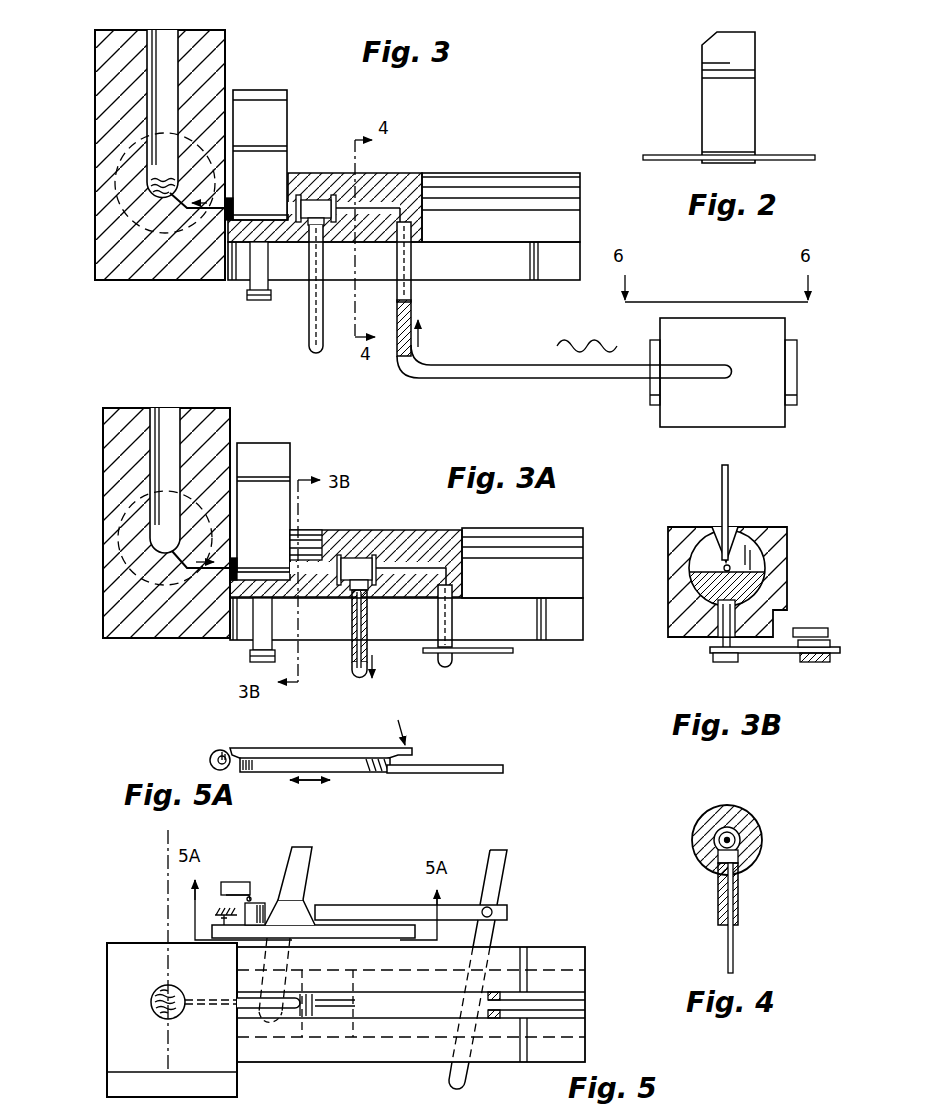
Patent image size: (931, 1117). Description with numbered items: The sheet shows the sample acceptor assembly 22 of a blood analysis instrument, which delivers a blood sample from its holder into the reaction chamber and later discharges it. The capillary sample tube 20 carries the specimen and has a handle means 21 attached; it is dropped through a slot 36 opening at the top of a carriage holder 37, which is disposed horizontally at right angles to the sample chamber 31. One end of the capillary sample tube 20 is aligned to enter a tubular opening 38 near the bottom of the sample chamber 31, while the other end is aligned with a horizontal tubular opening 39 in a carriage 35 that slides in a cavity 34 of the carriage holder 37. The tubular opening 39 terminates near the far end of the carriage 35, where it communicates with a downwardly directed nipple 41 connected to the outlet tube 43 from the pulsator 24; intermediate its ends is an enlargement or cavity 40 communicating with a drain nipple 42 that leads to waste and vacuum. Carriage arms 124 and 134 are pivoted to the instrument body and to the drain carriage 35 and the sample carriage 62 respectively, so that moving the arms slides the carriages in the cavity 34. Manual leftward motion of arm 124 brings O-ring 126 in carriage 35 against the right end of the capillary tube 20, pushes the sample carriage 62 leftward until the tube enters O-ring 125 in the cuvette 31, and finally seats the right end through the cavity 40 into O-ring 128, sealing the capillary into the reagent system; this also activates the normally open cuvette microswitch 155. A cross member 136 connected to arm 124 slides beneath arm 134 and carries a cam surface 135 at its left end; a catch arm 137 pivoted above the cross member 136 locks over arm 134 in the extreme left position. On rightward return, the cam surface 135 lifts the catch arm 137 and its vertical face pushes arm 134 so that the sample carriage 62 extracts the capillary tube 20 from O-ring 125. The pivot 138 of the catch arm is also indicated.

In FIG. 3, the capillary sample tube 20 is at (206, 226).
In FIG. 2, the capillary sample tube 20 is at (768, 155).
In FIG. 3A, the capillary sample tube 20 is at (205, 580).
In FIG. 3B, the capillary sample tube 20 is at (722, 568).
In FIG. 5, the capillary sample tube 20 is at (330, 1020).
In FIG. 3, the handle means 21 is at (287, 106).
In FIG. 2, the handle means 21 is at (756, 56).
In FIG. 3A, the handle means 21 is at (260, 511).
In FIG. 3B, the handle means 21 is at (730, 492).
In FIG. 3, the sample acceptor assembly 22 is at (500, 152).
In FIG. 3, the pulsator 24 is at (736, 354).
In FIG. 3, the sample chamber 31 is at (95, 100).
In FIG. 3A, the sample chamber 31 is at (103, 490).
In FIG. 5, the sample chamber 31 is at (107, 1000).
In FIG. 3, the cavity 34 is at (570, 216).
In FIG. 3A, the cavity 34 is at (406, 584).
In FIG. 5, the cavity 34 is at (585, 1000).
In FIG. 3, the carriage 35 is at (405, 177).
In FIG. 4, the carriage 35 is at (700, 818).
In FIG. 5, the carriage 35 is at (406, 1015).
In FIG. 3B, the slot 36 is at (718, 530).
In FIG. 3, the carriage holder 37 is at (546, 173).
In FIG. 3B, the carriage holder 37 is at (790, 545).
In FIG. 5, the carriage holder 37 is at (544, 947).
In FIG. 3, the tubular opening 38 is at (186, 150).
In FIG. 3A, the tubular opening 38 is at (188, 552).
In FIG. 3A, the tubular opening 39 is at (433, 530).
In FIG. 4, the tubular opening 39 is at (742, 848).
In FIG. 3, the cavity 40 is at (315, 196).
In FIG. 3A, the cavity 40 is at (360, 556).
In FIG. 4, the cavity 40 is at (728, 832).
In FIG. 3, the nipple 41 is at (413, 298).
In FIG. 3A, the nipple 41 is at (452, 662).
In FIG. 3, the drain nipple 42 is at (309, 300).
In FIG. 3A, the drain nipple 42 is at (350, 658).
In FIG. 4, the drain nipple 42 is at (740, 906).
In FIG. 3, the outlet tube 43 is at (468, 366).
In FIG. 3A, the sample carriage 62 is at (232, 600).
In FIG. 3B, the sample carriage 62 is at (748, 535).
In FIG. 5, the sample carriage 62 is at (296, 1020).
In FIG. 3A, the carriage arm 124 is at (513, 652).
In FIG. 5, the carriage arm 124 is at (507, 862).
In FIG. 3, the O-ring 125 is at (228, 275).
In FIG. 3A, the O-ring 126 is at (340, 586).
In FIG. 3A, the O-ring 128 is at (380, 588).
In FIG. 4, the O-ring 128 is at (738, 834).
In FIG. 3A, the carriage arm 134 is at (250, 655).
In FIG. 3B, the carriage arm 134 is at (773, 656).
In FIG. 5A, the carriage arm 134 is at (394, 774).
In FIG. 5, the carriage arm 134 is at (308, 852).
In FIG. 5A, the cam surface 135 is at (270, 773).
In FIG. 3B, the cross member 136 is at (818, 664).
In FIG. 5A, the cross member 136 is at (476, 766).
In FIG. 5, the cross member 136 is at (507, 912).
In FIG. 3B, the catch arm 137 is at (810, 628).
In FIG. 5A, the catch arm 137 is at (340, 748).
In FIG. 5, the catch arm 137 is at (300, 910).
In FIG. 5A, the pivot 138 is at (212, 756).
In FIG. 5, the cuvette microswitch 155 is at (228, 882).